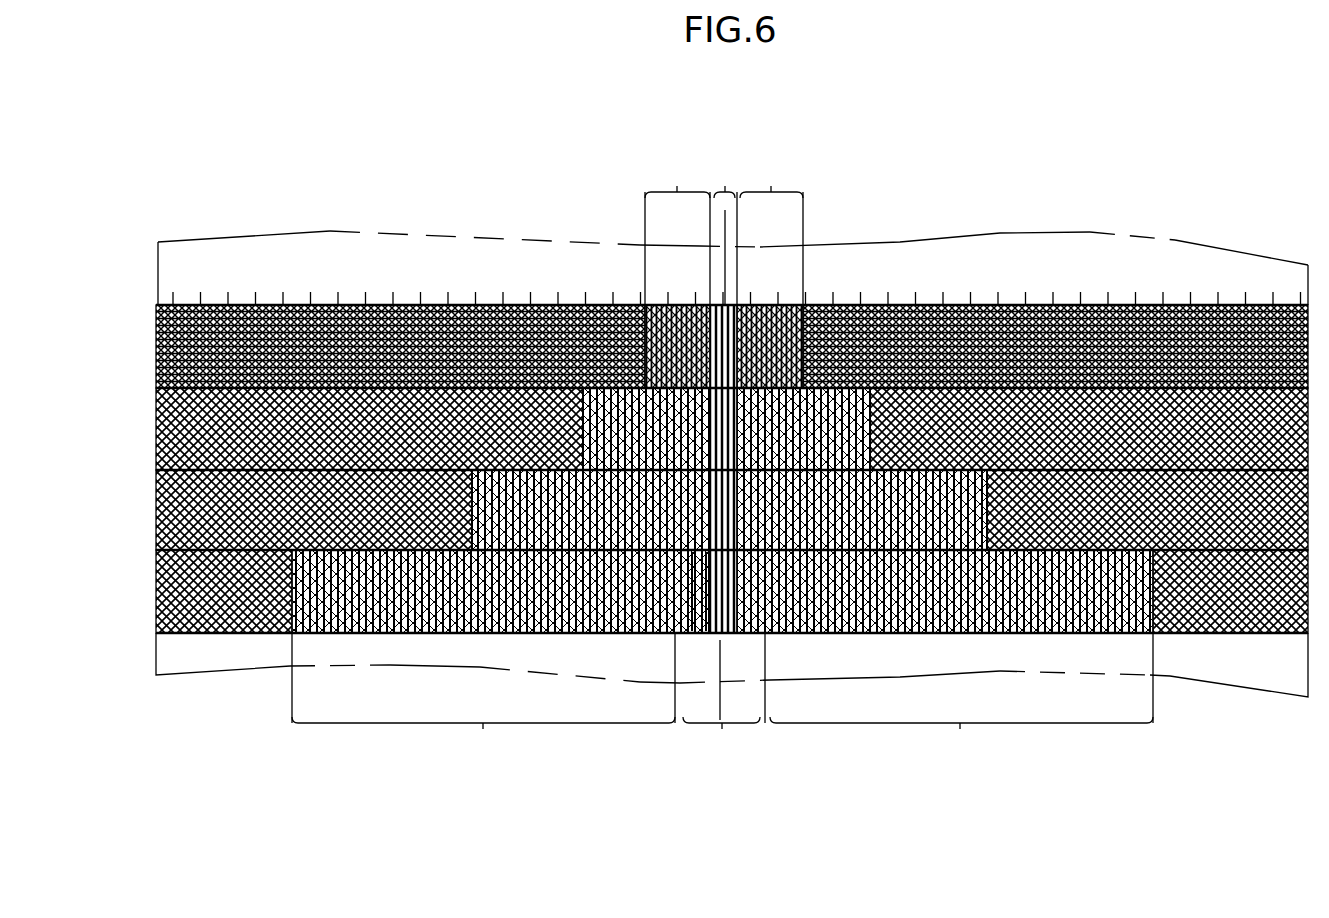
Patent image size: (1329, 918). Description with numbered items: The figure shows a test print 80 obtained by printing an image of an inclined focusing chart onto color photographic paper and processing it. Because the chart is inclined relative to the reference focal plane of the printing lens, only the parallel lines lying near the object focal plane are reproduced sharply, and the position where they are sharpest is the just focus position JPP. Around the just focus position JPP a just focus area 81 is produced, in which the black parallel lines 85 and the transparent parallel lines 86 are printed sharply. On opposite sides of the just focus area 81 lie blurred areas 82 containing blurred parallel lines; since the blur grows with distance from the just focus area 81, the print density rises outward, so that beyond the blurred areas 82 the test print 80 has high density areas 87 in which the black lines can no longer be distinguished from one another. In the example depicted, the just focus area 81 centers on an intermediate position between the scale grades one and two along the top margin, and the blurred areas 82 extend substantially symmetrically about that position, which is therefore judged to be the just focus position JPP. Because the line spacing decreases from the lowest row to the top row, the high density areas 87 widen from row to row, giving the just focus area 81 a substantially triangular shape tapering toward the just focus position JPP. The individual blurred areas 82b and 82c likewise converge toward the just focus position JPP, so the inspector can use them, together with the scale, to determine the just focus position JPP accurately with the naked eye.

The test print 80 is at (168, 247).
The just focus area 81 is at (725, 210).
The blurred areas 82 is at (722, 456).
The blurred area 82b is at (660, 305).
The blurred area 82c is at (790, 305).
The black parallel lines 85 is at (692, 636).
The transparent parallel lines 86 is at (706, 636).
The high density areas 87 is at (275, 305).
The just focus position JPP is at (727, 227).